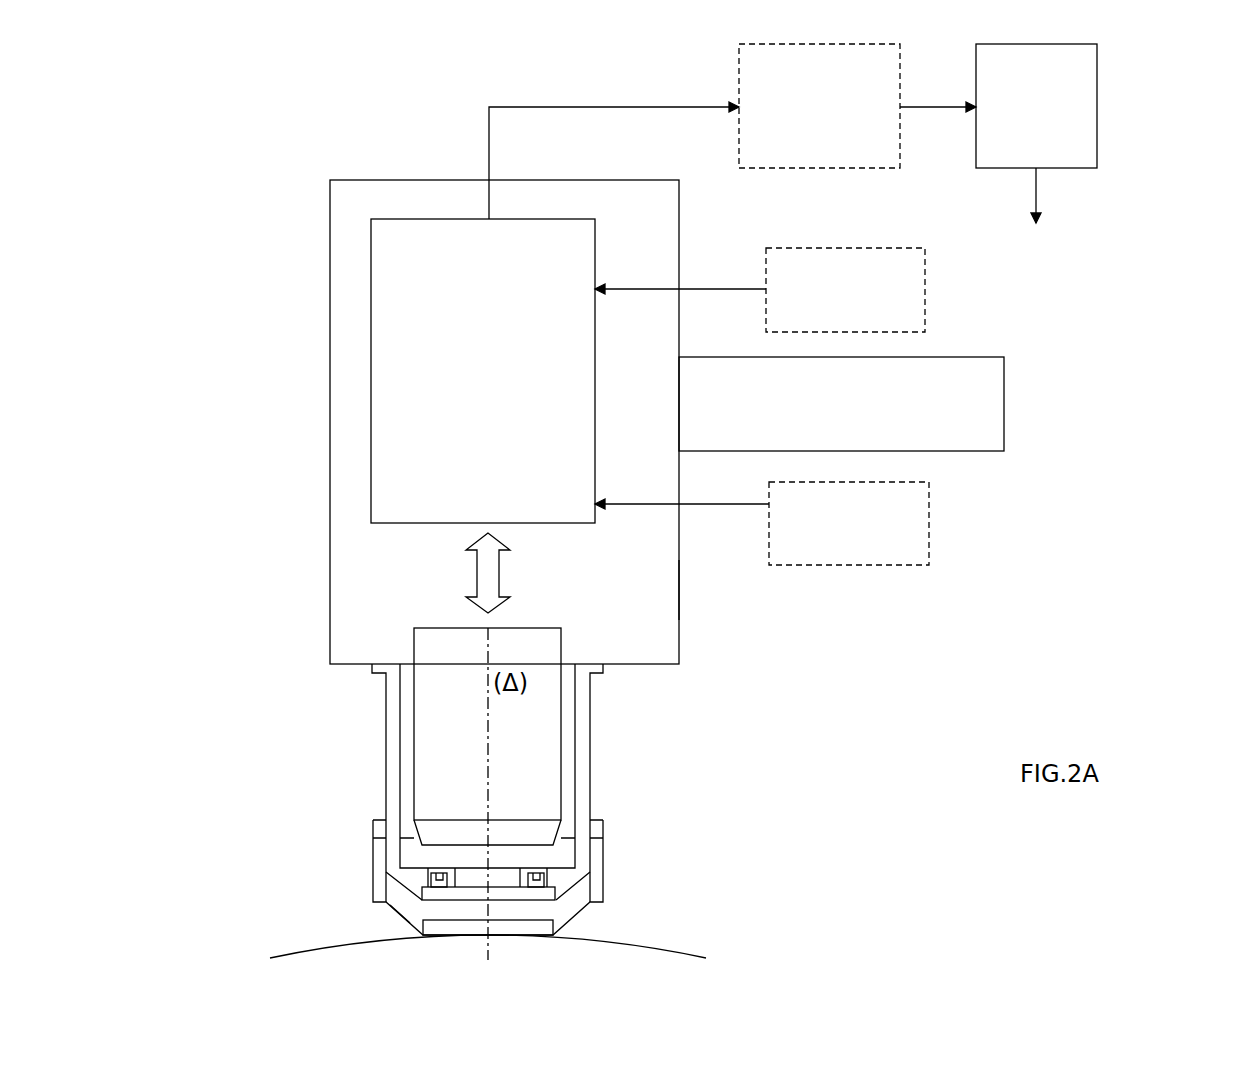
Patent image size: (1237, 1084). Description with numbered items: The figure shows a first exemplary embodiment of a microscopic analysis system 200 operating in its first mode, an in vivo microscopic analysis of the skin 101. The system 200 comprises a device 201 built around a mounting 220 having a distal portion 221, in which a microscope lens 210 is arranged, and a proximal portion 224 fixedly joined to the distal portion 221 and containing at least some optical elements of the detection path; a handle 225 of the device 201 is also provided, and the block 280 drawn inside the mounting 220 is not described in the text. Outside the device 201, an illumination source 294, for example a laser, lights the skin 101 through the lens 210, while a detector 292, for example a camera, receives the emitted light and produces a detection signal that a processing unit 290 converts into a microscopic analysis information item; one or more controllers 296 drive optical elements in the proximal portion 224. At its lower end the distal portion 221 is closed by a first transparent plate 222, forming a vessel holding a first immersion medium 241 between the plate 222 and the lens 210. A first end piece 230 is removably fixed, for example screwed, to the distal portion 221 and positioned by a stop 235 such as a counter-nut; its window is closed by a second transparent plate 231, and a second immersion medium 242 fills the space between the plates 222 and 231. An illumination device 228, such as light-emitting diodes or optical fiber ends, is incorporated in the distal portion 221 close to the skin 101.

The microscopic analysis system 200 is at (1236, 66).
The device for microscopic analysis 201 is at (249, 197).
The mounting 220 is at (330, 557).
The light source / controller unit 280 is at (371, 360).
The detector 292 is at (739, 75).
The processing unit 290 is at (1096, 127).
The illumination source 294 is at (925, 260).
The controller 296 is at (929, 510).
The handle 225 is at (1004, 377).
The proximal portion 224 is at (679, 590).
The microscope lens 210 is at (533, 740).
The distal portion 221 is at (592, 773).
The stop 235 is at (597, 830).
The first end piece 230 is at (603, 860).
The second transparent plate 231 is at (537, 927).
The first immersion medium 241 is at (408, 858).
The second immersion medium 242 is at (447, 893).
The illumination device 228 is at (537, 872).
The first transparent plate 222 is at (405, 900).
The skin 101 is at (652, 958).